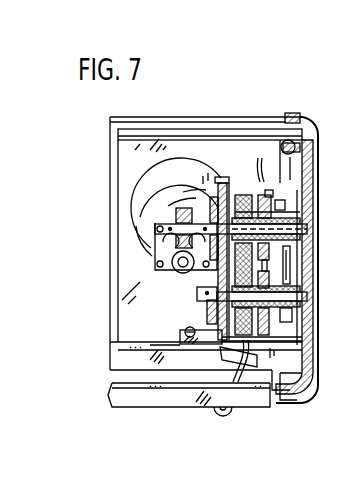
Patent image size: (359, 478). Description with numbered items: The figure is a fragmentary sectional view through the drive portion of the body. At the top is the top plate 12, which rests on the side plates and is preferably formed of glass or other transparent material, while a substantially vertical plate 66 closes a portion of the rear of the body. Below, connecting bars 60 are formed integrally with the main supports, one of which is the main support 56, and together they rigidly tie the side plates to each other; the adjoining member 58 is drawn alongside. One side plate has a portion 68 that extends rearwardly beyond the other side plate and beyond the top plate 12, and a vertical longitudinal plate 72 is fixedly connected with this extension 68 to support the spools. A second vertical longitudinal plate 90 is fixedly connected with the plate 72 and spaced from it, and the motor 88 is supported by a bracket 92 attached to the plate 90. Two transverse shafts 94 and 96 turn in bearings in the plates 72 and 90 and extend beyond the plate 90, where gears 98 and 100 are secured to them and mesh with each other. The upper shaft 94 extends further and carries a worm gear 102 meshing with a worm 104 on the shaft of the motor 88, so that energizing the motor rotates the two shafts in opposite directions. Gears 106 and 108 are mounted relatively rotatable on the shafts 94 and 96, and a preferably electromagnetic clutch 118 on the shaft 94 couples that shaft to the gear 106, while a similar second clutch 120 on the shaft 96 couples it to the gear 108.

The top plate 12 is at (172, 119).
The main support 56 is at (137, 394).
The lower frame bar strip 58 is at (168, 393).
The connecting bar 60 is at (118, 359).
The vertical plate 66 is at (114, 255).
The extension portion 68 is at (307, 389).
The vertical longitudinal plate 72 is at (304, 277).
The motor 88 is at (134, 172).
The vertical longitudinal plate 90 is at (231, 188).
The bracket 92 is at (157, 271).
The upper transverse shaft 94 is at (306, 234).
The lower transverse shaft 96 is at (306, 299).
The gear 98 is at (216, 180).
The gear 100 is at (206, 318).
The worm gear 102 is at (168, 213).
The worm 104 is at (172, 272).
The upper gear 106 is at (302, 213).
The lower gear 108 is at (296, 318).
The clutch 118 is at (270, 190).
The second clutch 120 is at (268, 330).